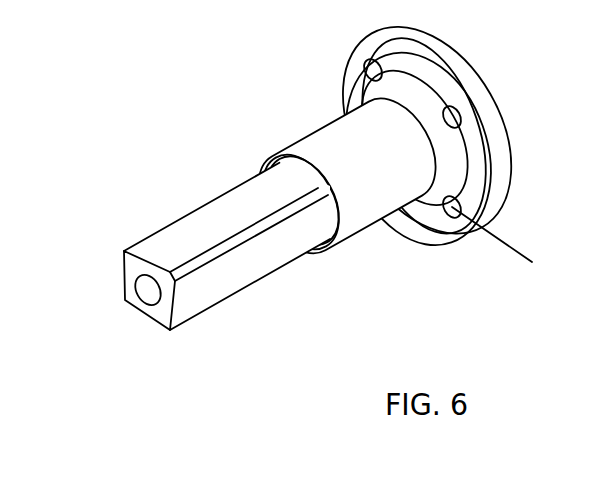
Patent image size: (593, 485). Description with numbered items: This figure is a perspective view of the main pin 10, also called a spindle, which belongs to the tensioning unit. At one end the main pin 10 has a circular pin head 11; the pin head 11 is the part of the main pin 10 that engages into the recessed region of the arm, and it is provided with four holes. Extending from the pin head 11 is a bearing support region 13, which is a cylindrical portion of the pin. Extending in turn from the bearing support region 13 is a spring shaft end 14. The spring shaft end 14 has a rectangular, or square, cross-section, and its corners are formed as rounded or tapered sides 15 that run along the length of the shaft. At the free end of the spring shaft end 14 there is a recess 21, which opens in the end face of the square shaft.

The main pin 10 is at (189, 172).
The pin head 11 is at (483, 88).
The bearing support region 13 is at (373, 221).
The spring shaft end 14 is at (201, 273).
The rounded or tapered sides 15 is at (252, 233).
The recess 21 is at (148, 290).